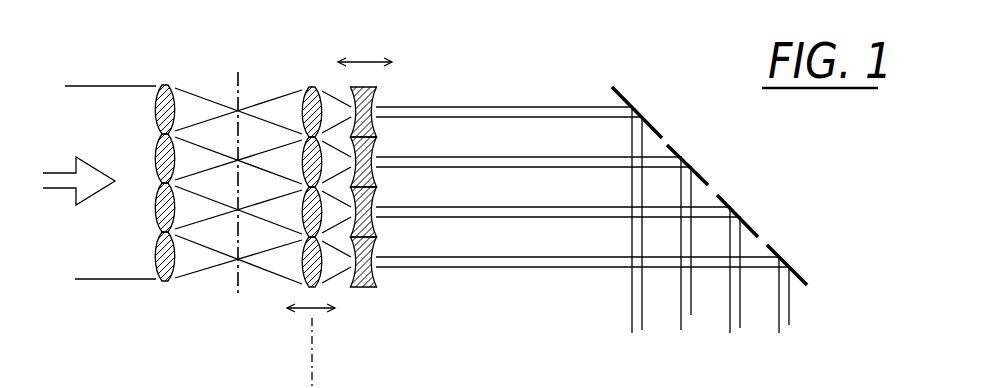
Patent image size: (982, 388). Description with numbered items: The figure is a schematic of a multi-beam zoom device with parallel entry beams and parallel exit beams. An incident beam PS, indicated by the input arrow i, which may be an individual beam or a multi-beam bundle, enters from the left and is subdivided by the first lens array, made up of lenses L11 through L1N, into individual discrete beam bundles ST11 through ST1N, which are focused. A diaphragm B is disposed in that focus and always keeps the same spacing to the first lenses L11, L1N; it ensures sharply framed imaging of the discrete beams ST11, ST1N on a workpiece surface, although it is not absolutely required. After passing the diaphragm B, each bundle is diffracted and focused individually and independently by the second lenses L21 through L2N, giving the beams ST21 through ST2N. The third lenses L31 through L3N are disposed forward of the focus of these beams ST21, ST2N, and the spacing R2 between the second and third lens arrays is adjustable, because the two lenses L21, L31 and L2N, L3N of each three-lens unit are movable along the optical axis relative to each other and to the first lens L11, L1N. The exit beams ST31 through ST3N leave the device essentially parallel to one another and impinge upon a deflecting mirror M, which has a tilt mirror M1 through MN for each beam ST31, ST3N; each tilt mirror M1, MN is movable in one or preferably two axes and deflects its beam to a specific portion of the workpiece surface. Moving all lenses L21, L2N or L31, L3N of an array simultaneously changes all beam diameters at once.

The incident light i is at (73, 181).
The incident beam PS is at (110, 157).
The first lens L11 is at (168, 85).
The first lens L1N is at (163, 285).
The discrete beam bundle ST11 is at (203, 113).
The discrete beam bundle ST1N is at (195, 257).
The diaphragm B is at (240, 78).
The second lens L21 is at (310, 85).
The second lens L2N is at (300, 289).
The spacing between second and third lens arrays R2 is at (368, 62).
The beam ST21 is at (328, 107).
The beam ST2N is at (330, 263).
The third lens L31 is at (380, 91).
The third lens L3N is at (373, 275).
The exit beam ST31 is at (507, 110).
The exit beam ST3N is at (502, 260).
The deflecting mirror M is at (738, 167).
The tilt mirror M1 is at (643, 108).
The tilt mirror MN is at (807, 257).